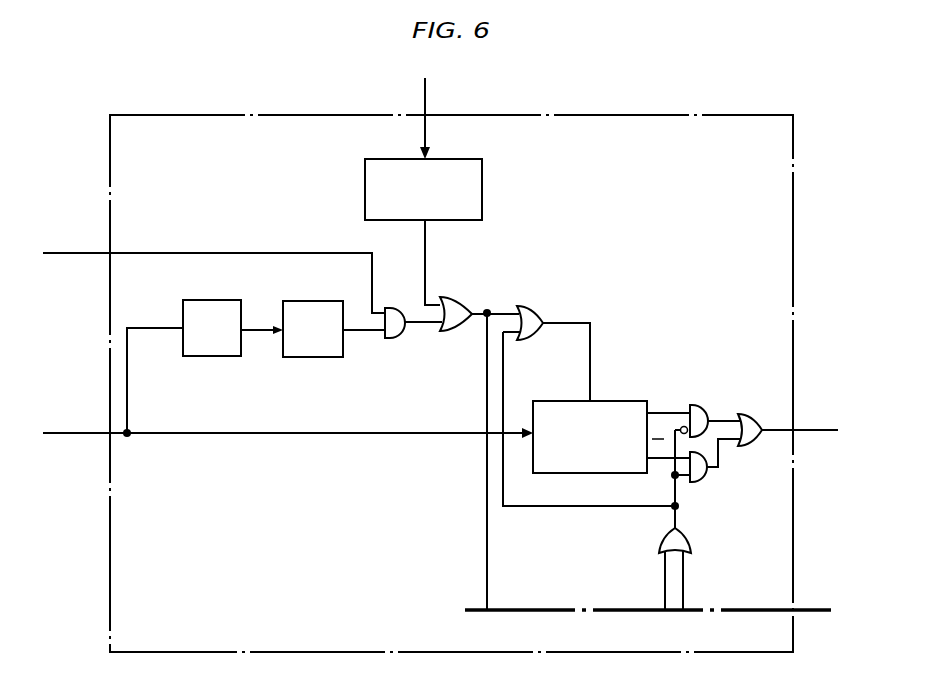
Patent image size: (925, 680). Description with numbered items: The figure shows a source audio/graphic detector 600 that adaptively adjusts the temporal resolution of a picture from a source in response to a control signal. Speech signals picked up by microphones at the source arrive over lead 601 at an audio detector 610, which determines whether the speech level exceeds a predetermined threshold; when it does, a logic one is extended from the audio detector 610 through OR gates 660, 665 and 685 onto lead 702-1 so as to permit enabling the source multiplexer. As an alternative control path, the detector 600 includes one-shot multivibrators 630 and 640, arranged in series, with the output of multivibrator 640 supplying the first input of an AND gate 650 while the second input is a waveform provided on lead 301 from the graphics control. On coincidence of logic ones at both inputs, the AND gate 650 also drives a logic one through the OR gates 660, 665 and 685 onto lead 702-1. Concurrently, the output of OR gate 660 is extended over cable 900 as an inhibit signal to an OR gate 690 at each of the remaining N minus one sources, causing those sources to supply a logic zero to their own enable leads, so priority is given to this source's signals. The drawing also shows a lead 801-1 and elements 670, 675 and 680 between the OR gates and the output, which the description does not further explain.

The source audio/graphic detector 600 is at (711, 116).
The lead 601 is at (427, 101).
The audio detector 610 is at (365, 180).
The lead 301 is at (76, 252).
The input line 801-1 is at (76, 432).
The one-shot multivibrator 630 is at (218, 300).
The one-shot multivibrator 640 is at (314, 301).
The AND gate 650 is at (392, 339).
The OR gate 660 is at (453, 298).
The OR gate 665 is at (530, 307).
The divide-by-two control flip-flop 670 is at (614, 401).
The AND gate 675 is at (699, 482).
The AND gate 680 is at (700, 405).
The OR gate 685 is at (751, 446).
The OR gate 690 is at (691, 544).
The lead 702-1 is at (814, 429).
The cable 900 is at (813, 600).